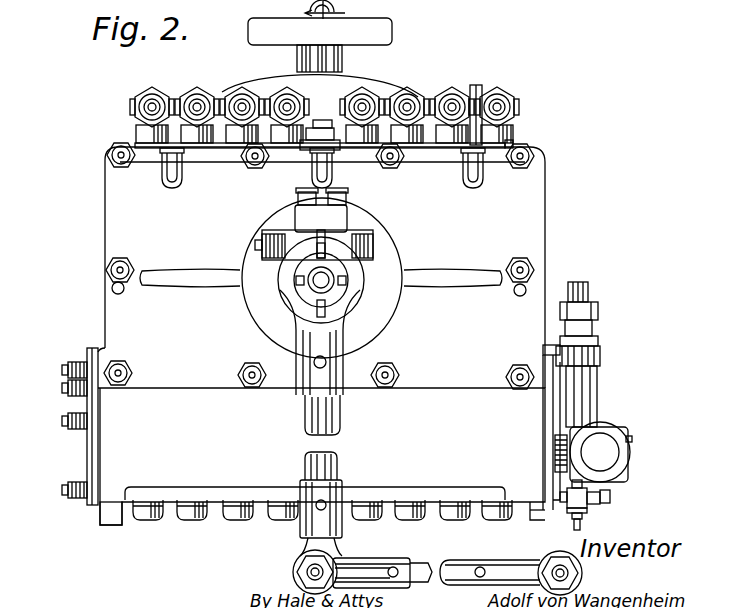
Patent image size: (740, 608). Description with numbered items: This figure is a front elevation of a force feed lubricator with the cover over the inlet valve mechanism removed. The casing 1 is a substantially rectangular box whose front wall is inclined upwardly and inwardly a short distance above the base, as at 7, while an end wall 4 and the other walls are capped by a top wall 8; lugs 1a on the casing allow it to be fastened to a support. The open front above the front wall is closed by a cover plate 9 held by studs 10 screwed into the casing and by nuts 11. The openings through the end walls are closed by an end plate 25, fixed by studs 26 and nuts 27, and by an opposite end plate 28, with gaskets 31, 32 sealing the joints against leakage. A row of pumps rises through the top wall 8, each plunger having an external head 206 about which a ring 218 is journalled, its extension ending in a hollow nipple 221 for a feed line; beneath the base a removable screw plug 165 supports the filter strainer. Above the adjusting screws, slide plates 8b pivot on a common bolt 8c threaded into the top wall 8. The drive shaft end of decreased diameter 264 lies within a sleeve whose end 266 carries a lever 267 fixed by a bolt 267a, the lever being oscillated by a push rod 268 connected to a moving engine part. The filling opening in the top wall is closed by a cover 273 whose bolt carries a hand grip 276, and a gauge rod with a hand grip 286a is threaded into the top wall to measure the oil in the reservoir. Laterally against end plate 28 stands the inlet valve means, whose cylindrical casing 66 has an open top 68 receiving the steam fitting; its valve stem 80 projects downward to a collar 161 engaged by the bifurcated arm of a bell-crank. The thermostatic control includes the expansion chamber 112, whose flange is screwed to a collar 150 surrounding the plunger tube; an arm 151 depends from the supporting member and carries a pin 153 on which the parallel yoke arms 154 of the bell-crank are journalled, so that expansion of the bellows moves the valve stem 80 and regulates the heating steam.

The casing 1 is at (548, 198).
The lugs 1a is at (560, 534).
The side or end wall 4 is at (333, 12).
The inclined portion of front wall 7 is at (321, 456).
The top wall 8 is at (135, 144).
The slide plates 8b is at (352, 160).
The bolt 8c is at (326, 120).
The cover plate 9 is at (528, 237).
The studs 10 is at (106, 155).
The nuts 11 is at (118, 165).
The end plate 25 is at (90, 448).
The studs 26 is at (64, 420).
The nuts 27 is at (70, 389).
The end plate 28 is at (552, 372).
The gasket 31 is at (90, 500).
The gasket 32 is at (546, 347).
The casing 66 is at (585, 378).
The top 68 is at (600, 350).
The valve stem 80 is at (582, 526).
The expansion chamber 112 is at (632, 455).
The collar 150 is at (620, 432).
The arm 151 is at (588, 511).
The pin 153 is at (611, 497).
The arms 154 is at (600, 504).
The collar 161 is at (562, 497).
The screw plug 165 is at (190, 522).
The head 206 is at (138, 132).
The ring 218 is at (515, 118).
The hollow nipple 221 is at (135, 107).
The decreased-diameter end of drive shaft 264 is at (335, 275).
The end of sleeve 266 is at (340, 297).
The lever 267 is at (307, 412).
The bolt 267a is at (372, 242).
The push rod 268 is at (365, 565).
The cover 273 is at (388, 86).
The hand grip 276 is at (386, 31).
The hand grip 286a is at (478, 85).